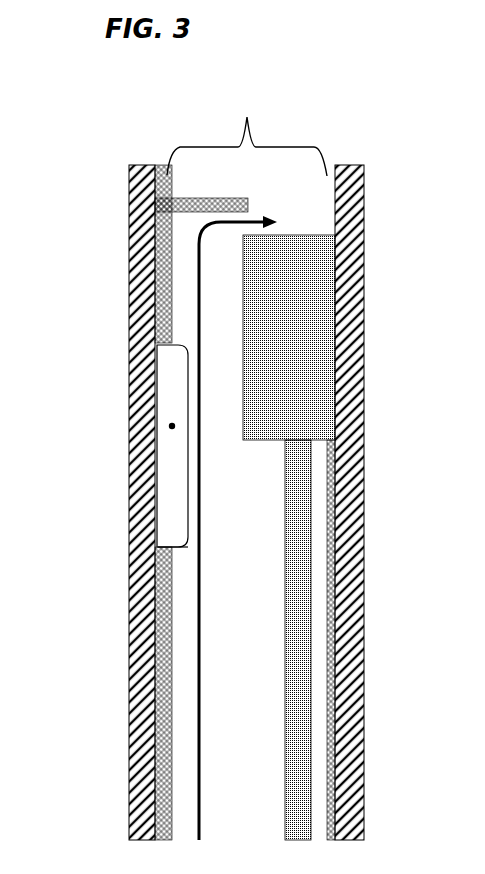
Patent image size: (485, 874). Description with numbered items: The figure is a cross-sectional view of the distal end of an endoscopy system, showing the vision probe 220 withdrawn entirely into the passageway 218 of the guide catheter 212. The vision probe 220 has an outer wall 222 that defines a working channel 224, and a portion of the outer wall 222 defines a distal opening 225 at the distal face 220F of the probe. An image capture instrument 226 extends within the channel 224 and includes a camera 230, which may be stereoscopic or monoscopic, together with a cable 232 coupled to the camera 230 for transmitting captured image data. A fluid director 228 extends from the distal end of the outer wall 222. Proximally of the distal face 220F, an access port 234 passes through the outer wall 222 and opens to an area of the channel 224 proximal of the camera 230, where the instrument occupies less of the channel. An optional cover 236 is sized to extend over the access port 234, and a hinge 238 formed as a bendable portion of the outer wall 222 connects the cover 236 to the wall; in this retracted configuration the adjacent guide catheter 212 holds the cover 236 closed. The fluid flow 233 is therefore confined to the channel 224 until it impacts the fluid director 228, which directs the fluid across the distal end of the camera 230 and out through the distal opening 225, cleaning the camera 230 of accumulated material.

The guide catheter 212 is at (363, 769).
The passageway 218 is at (163, 183).
The vision probe 220 is at (193, 230).
The distal face 220F is at (247, 130).
The outer wall 222 is at (163, 578).
The working channel 224 is at (228, 588).
The distal opening 225 is at (288, 209).
The image capture instrument 226 is at (297, 233).
The fluid director 228 is at (248, 216).
The camera 230 is at (289, 337).
The cable 232 is at (298, 553).
The fluid flow 233 is at (197, 295).
The access port 234 is at (168, 427).
The cover 236 is at (175, 397).
The hinge 238 is at (160, 547).